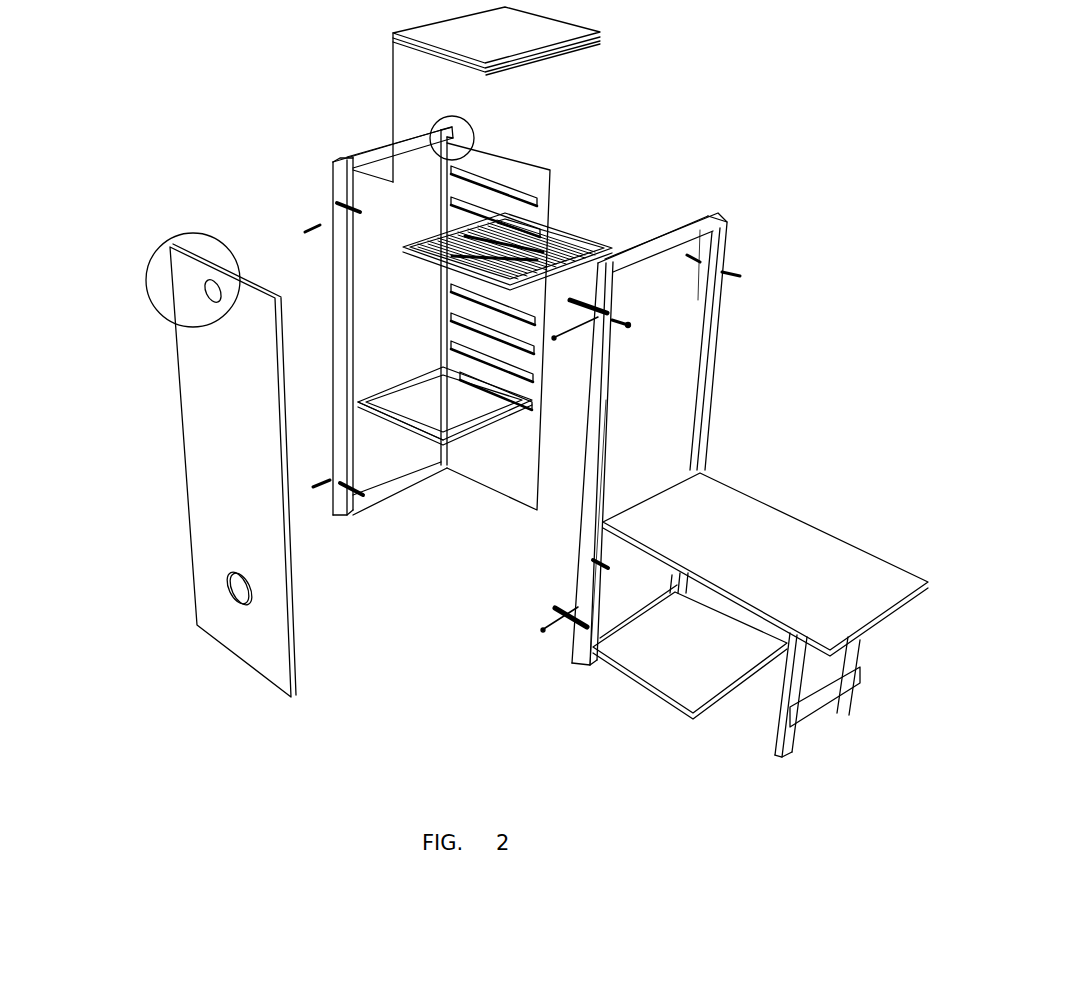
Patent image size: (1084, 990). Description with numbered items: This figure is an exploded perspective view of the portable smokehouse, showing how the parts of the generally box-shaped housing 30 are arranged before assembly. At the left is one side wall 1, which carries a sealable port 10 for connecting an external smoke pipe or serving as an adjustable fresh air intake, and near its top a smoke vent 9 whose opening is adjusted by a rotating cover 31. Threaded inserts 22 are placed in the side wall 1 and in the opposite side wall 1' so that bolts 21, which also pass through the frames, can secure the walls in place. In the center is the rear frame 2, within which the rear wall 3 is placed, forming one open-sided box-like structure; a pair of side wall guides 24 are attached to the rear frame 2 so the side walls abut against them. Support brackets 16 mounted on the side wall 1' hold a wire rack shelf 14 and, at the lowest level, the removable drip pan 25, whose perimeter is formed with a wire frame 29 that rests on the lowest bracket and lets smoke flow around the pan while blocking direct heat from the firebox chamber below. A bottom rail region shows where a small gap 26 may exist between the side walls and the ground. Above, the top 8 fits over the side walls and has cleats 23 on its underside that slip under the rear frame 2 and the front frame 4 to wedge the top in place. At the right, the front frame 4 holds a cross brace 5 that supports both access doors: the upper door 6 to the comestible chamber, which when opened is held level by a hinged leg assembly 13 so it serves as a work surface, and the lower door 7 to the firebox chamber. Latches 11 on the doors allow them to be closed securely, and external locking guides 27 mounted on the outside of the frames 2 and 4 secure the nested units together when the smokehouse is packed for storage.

The side wall 1 is at (205, 462).
The side wall 1' is at (516, 316).
The rear frame 2 is at (420, 131).
The rear wall 3 is at (368, 265).
The front frame 4 is at (664, 426).
The brace 5 is at (569, 532).
The upper door 6 is at (689, 652).
The lower door 7 is at (765, 564).
The top 8 is at (543, 27).
The smoke vent 9 is at (495, 184).
The sealable port 10 is at (253, 574).
The latch 11 is at (690, 421).
The hinged leg assembly 13 is at (843, 695).
The shelf 14 is at (512, 246).
The support bracket 16 is at (537, 373).
The bolt 21 is at (430, 428).
The threaded insert 22 is at (374, 437).
The cleat 23 is at (581, 66).
The side wall guide 24 is at (577, 299).
The drip pan 25 is at (445, 396).
The gap 26 is at (422, 488).
The external locking guide 27 is at (518, 415).
The wire frame 29 is at (400, 429).
The housing 30 is at (374, 139).
The rotating cover 31 is at (218, 294).